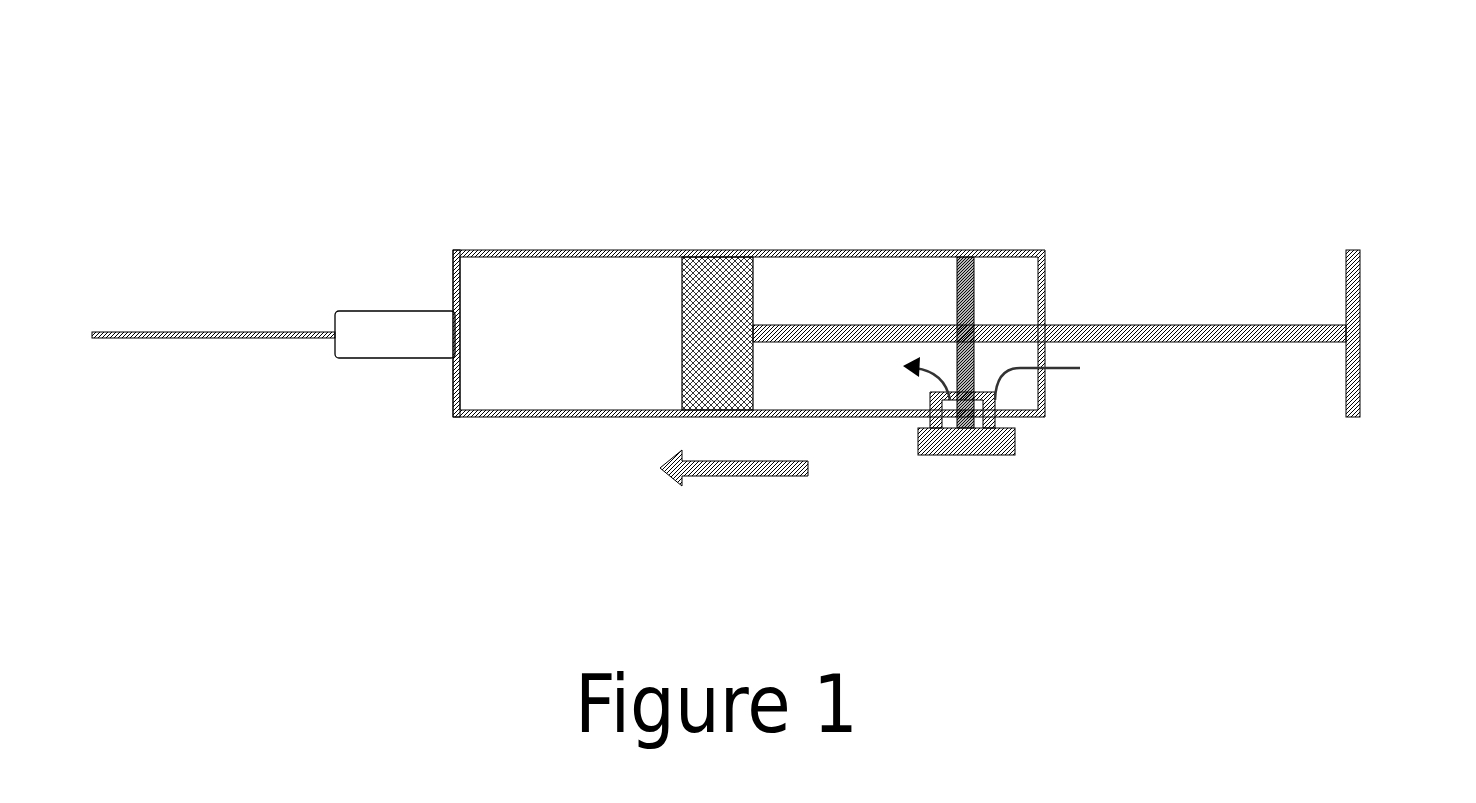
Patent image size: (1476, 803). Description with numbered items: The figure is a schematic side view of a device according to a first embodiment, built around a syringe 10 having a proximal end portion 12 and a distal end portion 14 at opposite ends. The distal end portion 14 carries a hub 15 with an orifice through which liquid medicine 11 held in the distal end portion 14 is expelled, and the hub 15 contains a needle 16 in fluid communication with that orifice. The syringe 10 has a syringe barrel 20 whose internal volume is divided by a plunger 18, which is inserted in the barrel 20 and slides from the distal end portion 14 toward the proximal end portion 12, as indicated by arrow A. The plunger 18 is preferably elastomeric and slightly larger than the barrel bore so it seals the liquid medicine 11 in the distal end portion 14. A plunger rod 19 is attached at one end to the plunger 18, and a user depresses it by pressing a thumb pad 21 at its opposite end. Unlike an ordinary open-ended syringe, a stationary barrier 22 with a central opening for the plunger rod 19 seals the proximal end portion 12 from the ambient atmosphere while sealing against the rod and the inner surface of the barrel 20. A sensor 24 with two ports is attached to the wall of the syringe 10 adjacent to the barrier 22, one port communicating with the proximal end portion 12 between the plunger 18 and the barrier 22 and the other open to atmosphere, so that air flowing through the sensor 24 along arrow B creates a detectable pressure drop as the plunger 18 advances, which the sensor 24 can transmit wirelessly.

The syringe 10 is at (783, 287).
The liquid medicine 11 is at (566, 353).
The proximal end portion 12 is at (1040, 270).
The distal end portion 14 is at (453, 268).
The hub 15 is at (378, 360).
The needle 16 is at (215, 325).
The plunger 18 is at (755, 277).
The plunger rod 19 is at (1160, 342).
The syringe barrel 20 is at (635, 247).
The thumb pad 21 is at (1357, 292).
The stationary barrier 22 is at (992, 267).
The sensor 24 is at (1003, 453).